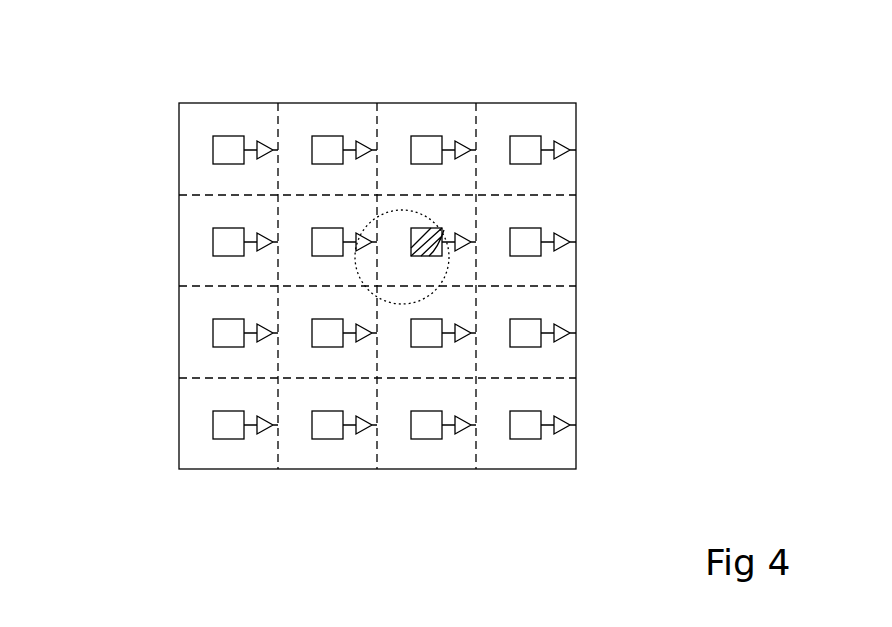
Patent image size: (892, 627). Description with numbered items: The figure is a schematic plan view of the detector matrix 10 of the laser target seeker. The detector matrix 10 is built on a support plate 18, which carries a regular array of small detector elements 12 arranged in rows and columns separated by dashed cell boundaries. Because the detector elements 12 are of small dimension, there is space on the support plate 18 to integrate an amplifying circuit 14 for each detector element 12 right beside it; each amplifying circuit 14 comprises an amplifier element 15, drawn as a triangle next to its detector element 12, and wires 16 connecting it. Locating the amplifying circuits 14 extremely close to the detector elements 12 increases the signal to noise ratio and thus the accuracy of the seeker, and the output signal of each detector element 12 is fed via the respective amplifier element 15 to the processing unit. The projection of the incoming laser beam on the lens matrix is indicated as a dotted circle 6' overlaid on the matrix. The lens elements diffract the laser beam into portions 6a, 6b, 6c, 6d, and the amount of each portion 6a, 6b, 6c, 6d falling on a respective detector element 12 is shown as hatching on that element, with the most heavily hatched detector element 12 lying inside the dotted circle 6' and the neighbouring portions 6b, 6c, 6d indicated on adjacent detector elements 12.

The detector matrix 10 is at (169, 528).
The detector element 12 is at (331, 243).
The amplifying circuit 14 is at (566, 449).
The amplifier element 15 is at (373, 437).
The wires 16 is at (457, 436).
The support plate 18 is at (193, 127).
The laser beam portion 6a is at (445, 230).
The laser beam portion 6b is at (422, 331).
The laser beam portion 6c is at (277, 432).
The laser beam portion 6d is at (345, 243).
The projection of the incoming laser beam 6' is at (521, 273).